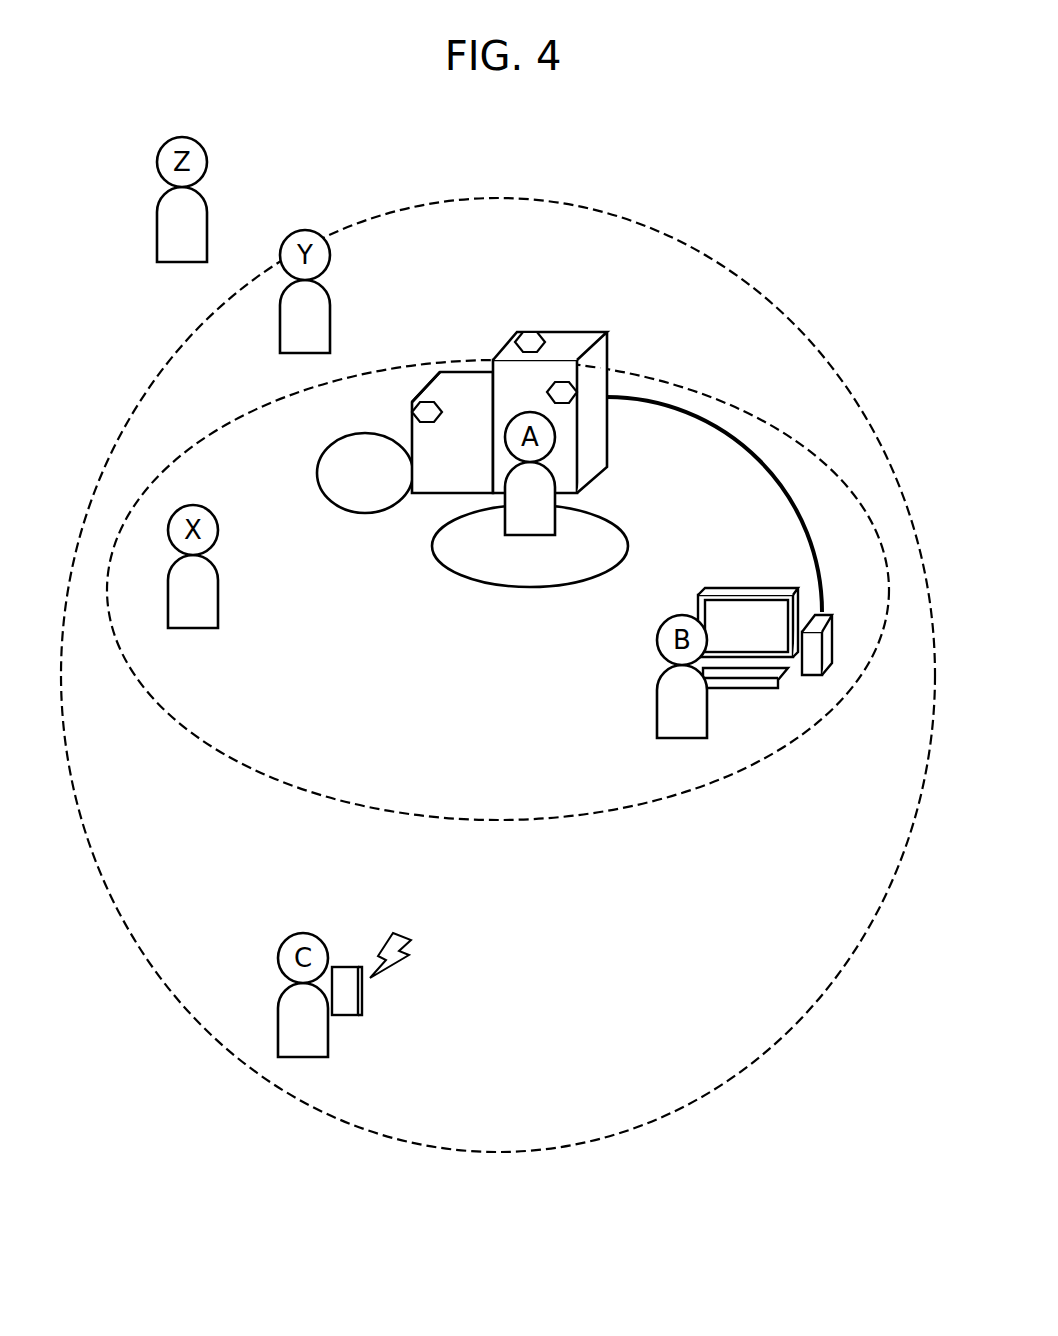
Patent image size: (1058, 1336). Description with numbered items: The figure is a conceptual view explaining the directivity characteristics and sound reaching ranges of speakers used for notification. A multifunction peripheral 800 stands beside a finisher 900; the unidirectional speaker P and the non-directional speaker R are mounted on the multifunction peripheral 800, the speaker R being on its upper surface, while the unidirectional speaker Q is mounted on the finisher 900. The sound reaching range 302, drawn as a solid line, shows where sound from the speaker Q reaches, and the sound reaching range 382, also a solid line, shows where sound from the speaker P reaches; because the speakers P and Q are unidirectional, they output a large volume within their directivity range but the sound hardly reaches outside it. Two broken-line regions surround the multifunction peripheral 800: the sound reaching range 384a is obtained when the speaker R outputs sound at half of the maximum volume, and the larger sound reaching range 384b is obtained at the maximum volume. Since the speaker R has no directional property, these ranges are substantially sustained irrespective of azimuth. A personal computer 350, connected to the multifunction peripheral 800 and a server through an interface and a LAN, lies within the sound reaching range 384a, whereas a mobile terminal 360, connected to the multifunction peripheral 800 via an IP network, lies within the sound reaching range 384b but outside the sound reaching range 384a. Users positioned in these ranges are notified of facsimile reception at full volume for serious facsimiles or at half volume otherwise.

The finisher 900 is at (440, 384).
The multifunction peripheral 800 is at (598, 376).
The sound reaching range 302 is at (372, 513).
The sound reaching range 382 is at (527, 587).
The personal computer 350 is at (740, 586).
The mobile terminal 360 is at (360, 997).
The sound reaching range 384a is at (558, 820).
The sound reaching range 384b is at (558, 1152).
The speaker P is at (563, 383).
The speaker Q is at (423, 407).
The speaker R is at (525, 339).